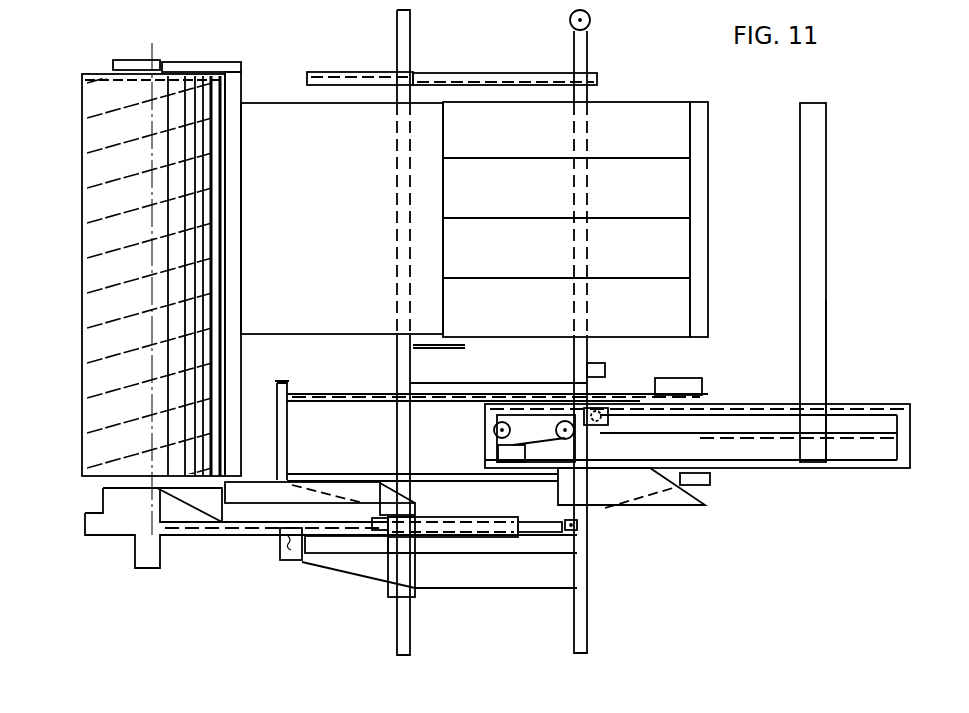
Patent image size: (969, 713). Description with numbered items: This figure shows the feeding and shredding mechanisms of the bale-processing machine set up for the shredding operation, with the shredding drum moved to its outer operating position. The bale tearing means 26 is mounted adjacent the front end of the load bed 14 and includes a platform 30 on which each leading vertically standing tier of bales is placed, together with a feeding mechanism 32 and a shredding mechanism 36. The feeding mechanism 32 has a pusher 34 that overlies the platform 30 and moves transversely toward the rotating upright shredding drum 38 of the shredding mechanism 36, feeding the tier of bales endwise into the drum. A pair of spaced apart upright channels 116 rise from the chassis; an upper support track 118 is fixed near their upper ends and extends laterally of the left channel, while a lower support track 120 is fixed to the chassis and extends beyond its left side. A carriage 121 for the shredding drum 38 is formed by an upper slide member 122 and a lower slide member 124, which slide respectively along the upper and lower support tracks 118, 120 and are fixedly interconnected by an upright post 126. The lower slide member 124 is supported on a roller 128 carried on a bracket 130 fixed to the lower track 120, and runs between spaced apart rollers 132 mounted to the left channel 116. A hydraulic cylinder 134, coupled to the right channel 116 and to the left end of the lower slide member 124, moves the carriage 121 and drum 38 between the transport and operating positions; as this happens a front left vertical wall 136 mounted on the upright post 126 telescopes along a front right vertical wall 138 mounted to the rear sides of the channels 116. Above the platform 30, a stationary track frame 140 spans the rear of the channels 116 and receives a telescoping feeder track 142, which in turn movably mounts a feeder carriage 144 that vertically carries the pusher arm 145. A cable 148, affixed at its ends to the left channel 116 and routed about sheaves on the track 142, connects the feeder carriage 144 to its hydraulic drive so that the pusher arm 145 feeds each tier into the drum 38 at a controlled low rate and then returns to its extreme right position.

The load bed 14 is at (688, 487).
The bale tearing means 26 is at (731, 91).
The platform 30 is at (265, 483).
The feeding mechanism 32 is at (629, 374).
The pusher 34 is at (828, 364).
The shredding mechanism 36 is at (70, 168).
The shredding drum 38 is at (83, 237).
The channels 116 is at (408, 57).
The upper support track 118 is at (505, 73).
The lower support track 120 is at (532, 582).
The carriage 121 is at (240, 28).
The upper slide member 122 is at (302, 73).
The lower slide member 124 is at (243, 535).
The upright post 126 is at (240, 180).
The roller 128 is at (346, 545).
The bracket 130 is at (288, 561).
The rollers 132 is at (409, 506).
The hydraulic cylinder 134 is at (499, 540).
The front left vertical wall 136 is at (353, 225).
The front right vertical wall 138 is at (566, 219).
The stationary track frame 140 is at (355, 372).
The telescoping feeder track 142 is at (487, 450).
The feeder carriage 144 is at (850, 423).
The pusher arm 145 is at (818, 258).
The cable 148 is at (722, 438).